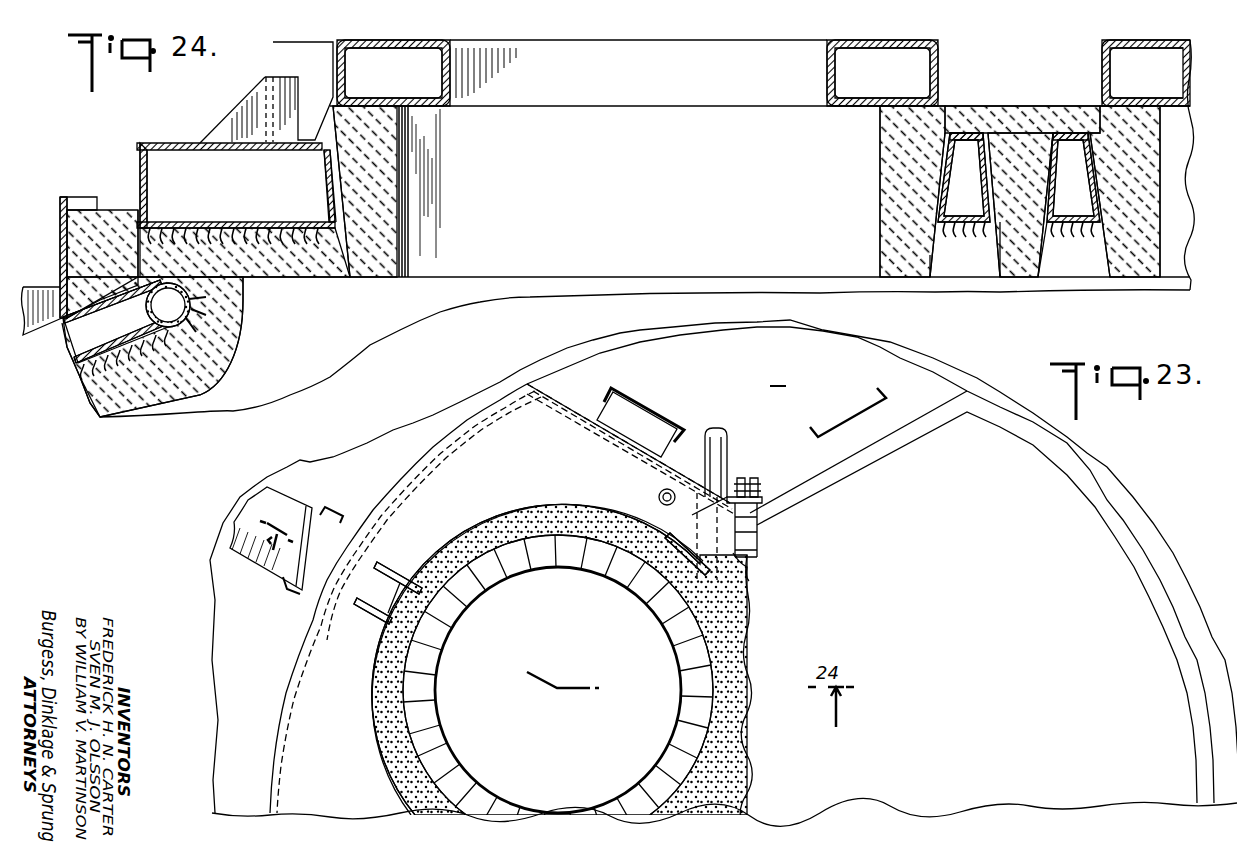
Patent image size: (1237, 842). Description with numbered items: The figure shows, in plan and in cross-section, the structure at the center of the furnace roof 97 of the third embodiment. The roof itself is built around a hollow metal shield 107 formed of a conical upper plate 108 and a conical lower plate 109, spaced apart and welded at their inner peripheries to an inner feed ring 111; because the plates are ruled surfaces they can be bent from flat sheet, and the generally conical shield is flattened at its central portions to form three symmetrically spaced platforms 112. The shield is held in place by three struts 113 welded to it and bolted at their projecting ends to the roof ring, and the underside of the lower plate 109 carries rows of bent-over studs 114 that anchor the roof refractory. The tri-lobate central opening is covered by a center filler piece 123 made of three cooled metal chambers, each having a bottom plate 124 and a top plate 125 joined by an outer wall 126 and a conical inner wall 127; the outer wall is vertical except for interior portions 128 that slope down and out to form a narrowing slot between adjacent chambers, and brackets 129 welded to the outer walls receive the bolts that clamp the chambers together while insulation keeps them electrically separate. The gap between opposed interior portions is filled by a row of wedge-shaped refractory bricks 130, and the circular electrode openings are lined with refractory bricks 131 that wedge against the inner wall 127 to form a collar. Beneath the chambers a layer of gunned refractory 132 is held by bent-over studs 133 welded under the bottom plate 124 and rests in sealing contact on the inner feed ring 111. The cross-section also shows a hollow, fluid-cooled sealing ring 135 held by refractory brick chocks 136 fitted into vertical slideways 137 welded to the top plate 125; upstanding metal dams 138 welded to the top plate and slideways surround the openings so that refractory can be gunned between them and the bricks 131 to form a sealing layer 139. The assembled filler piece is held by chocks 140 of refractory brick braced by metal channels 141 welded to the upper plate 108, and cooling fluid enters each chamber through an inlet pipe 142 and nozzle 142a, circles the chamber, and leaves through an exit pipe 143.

In FIG. 23, the furnace roof 97 is at (1100, 480).
In FIG. 24, the hollow metal shield 107 is at (60, 364).
In FIG. 23, the hollow metal shield 107 is at (296, 638).
In FIG. 24, the upper plate 108 is at (62, 342).
In FIG. 23, the upper plate 108 is at (1165, 558).
In FIG. 24, the lower plate 109 is at (109, 356).
In FIG. 24, the inner feed ring 111 is at (244, 298).
In FIG. 24, the platforms 112 is at (42, 311).
In FIG. 23, the platforms 112 is at (783, 373).
In FIG. 24, the struts 113 is at (38, 287).
In FIG. 23, the struts 113 is at (290, 481).
In FIG. 24, the bent-over studs 114 is at (96, 418).
In FIG. 24, the center filler piece 123 is at (971, 86).
In FIG. 23, the center filler piece 123 is at (502, 426).
In FIG. 24, the bottom plate 124 is at (208, 224).
In FIG. 24, the top plate 125 is at (184, 150).
In FIG. 23, the top plate 125 is at (306, 716).
In FIG. 24, the outer wall 126 is at (152, 194).
In FIG. 24, the inner wall 127 is at (340, 174).
In FIG. 24, the interior portions 128 is at (992, 164).
In FIG. 23, the brackets 129 is at (744, 477).
In FIG. 24, the wedge-shaped refractory bricks 130 is at (1028, 263).
In FIG. 23, the wedge-shaped refractory bricks 130 is at (748, 530).
In FIG. 24, the refractory bricks 131 is at (382, 180).
In FIG. 23, the refractory bricks 131 is at (492, 576).
In FIG. 24, the gunned refractory 132 is at (984, 262).
In FIG. 24, the bent-over studs 133 is at (950, 240).
In FIG. 24, the sealing ring 135 is at (645, 20).
In FIG. 24, the refractory brick chocks 136 is at (320, 54).
In FIG. 24, the vertical slideways 137 is at (224, 122).
In FIG. 23, the vertical slideways 137 is at (413, 546).
In FIG. 23, the metal dams 138 is at (446, 532).
In FIG. 24, the sealing layer 139 is at (1065, 106).
In FIG. 23, the sealing layer 139 is at (500, 512).
In FIG. 24, the chocks 140 is at (112, 256).
In FIG. 23, the chocks 140 is at (336, 537).
In FIG. 24, the metal channels 141 is at (66, 290).
In FIG. 23, the metal channels 141 is at (318, 506).
In FIG. 23, the inlet pipe 142 is at (740, 408).
In FIG. 23, the nozzle 142a is at (752, 622).
In FIG. 23, the exit pipe 143 is at (658, 496).